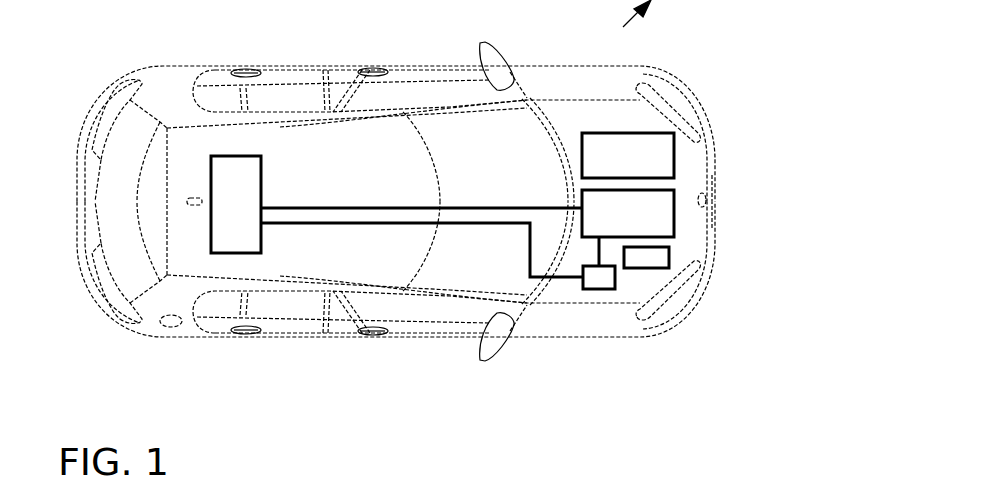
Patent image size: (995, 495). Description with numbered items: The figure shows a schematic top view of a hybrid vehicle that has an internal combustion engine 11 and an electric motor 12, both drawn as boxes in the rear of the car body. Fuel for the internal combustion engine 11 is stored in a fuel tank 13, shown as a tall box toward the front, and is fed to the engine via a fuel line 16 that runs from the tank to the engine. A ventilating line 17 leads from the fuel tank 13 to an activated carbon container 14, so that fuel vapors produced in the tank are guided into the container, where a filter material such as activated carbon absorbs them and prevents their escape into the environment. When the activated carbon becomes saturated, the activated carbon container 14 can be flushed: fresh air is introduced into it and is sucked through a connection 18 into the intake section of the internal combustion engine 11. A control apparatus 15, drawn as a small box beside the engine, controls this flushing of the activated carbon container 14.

The internal combustion engine 11 is at (673, 211).
The electric motor 12 is at (673, 155).
The fuel tank 13 is at (261, 185).
The activated carbon container 14 is at (598, 287).
The control apparatus 15 is at (669, 257).
The fuel line 16 is at (371, 208).
The ventilating line 17 is at (397, 223).
The connection 18 is at (599, 247).